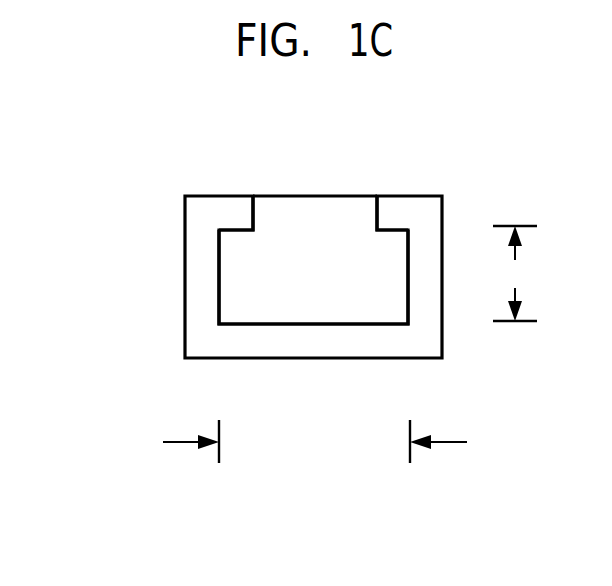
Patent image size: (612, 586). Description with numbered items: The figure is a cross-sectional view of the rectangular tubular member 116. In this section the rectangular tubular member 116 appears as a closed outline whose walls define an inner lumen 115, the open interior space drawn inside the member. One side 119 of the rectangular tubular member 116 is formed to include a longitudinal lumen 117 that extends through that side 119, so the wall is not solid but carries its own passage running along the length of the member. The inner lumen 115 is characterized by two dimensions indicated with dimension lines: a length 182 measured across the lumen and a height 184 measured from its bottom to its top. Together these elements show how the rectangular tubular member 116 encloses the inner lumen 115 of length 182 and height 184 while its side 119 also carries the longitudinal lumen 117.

The rectangular tubular member 116 is at (140, 283).
The side 119 is at (223, 217).
The longitudinal lumen 117 is at (323, 217).
The inner lumen 115 is at (313, 277).
The length 182 is at (315, 441).
The height 184 is at (515, 273).